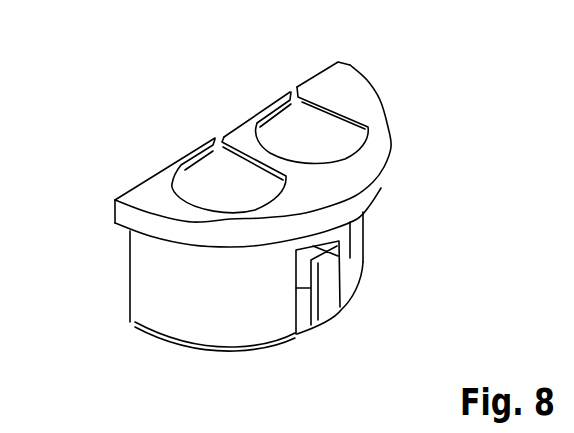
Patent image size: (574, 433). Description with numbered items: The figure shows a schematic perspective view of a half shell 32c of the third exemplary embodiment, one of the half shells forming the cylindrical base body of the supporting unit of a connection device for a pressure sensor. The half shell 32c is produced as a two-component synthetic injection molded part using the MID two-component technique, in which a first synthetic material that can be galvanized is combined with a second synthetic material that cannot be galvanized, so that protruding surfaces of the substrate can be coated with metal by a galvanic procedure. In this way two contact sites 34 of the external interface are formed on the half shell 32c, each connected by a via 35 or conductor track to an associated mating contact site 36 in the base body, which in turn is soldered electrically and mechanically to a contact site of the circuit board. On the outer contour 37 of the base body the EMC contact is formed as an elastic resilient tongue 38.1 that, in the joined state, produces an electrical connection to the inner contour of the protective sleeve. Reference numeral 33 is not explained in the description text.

The half shell 32c is at (90, 179).
The semicircular top plate 33 is at (392, 155).
The contact site 34 is at (207, 180).
The via 35 is at (212, 153).
The mating contact site 36 is at (192, 245).
The outer contour 37 is at (134, 326).
The elastic resilient tongue 38.1 is at (328, 274).